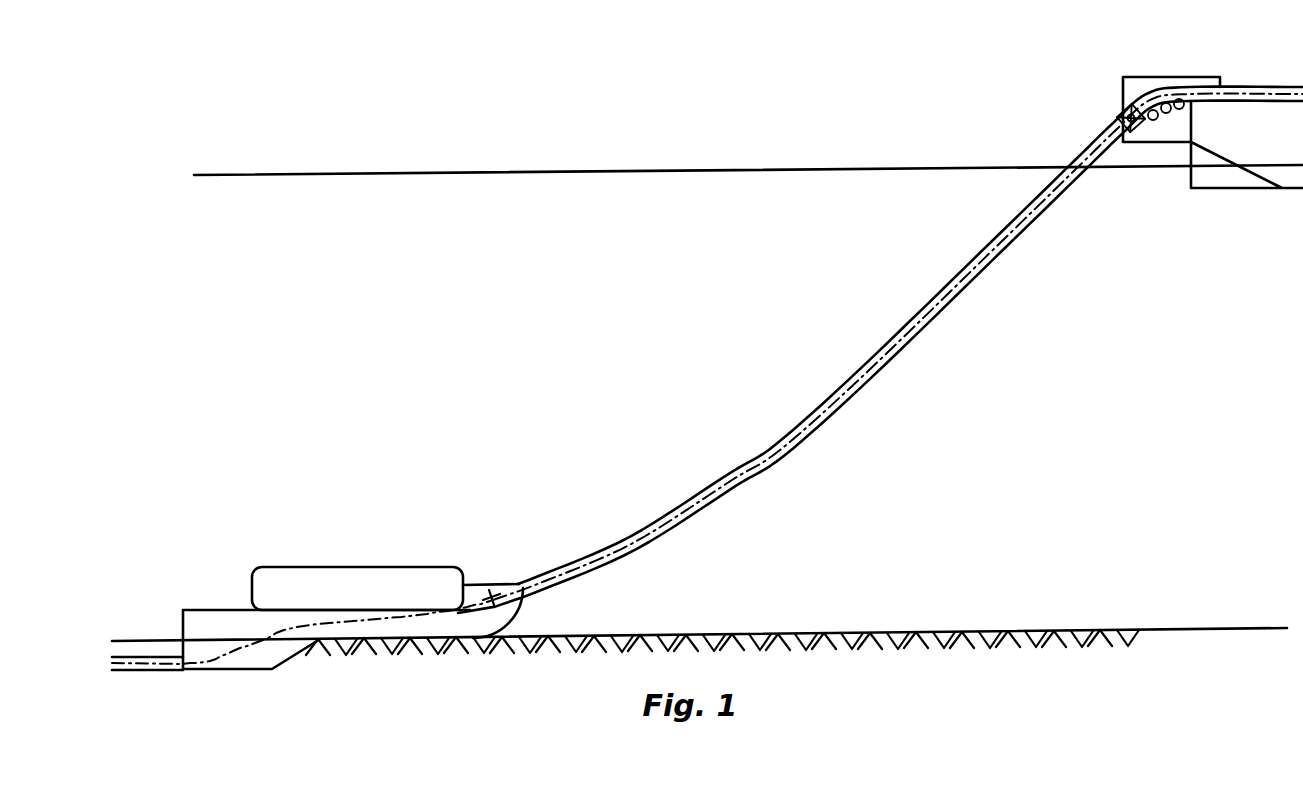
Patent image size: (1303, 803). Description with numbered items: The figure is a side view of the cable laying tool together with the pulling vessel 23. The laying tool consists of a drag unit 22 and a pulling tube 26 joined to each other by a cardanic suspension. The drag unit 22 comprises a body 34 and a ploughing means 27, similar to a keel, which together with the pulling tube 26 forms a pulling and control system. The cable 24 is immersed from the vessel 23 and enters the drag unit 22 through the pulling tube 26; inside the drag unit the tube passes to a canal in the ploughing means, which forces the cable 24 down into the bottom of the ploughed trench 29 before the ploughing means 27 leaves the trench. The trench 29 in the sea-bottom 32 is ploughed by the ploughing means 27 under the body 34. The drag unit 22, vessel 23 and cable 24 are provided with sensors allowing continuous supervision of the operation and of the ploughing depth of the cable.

The drag unit 22 is at (362, 585).
The vessel 23 is at (1255, 118).
The cable 24 is at (150, 662).
The pulling tube 26 is at (873, 353).
The ploughing means 27 is at (267, 655).
The trench 29 is at (147, 639).
The sea-bottom 32 is at (1025, 629).
The body 34 is at (463, 626).